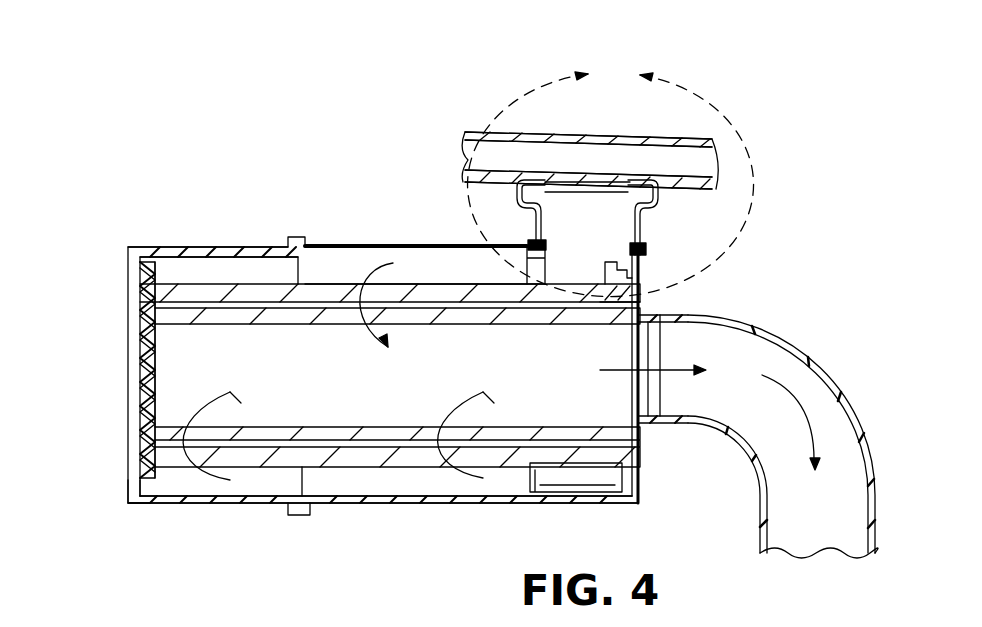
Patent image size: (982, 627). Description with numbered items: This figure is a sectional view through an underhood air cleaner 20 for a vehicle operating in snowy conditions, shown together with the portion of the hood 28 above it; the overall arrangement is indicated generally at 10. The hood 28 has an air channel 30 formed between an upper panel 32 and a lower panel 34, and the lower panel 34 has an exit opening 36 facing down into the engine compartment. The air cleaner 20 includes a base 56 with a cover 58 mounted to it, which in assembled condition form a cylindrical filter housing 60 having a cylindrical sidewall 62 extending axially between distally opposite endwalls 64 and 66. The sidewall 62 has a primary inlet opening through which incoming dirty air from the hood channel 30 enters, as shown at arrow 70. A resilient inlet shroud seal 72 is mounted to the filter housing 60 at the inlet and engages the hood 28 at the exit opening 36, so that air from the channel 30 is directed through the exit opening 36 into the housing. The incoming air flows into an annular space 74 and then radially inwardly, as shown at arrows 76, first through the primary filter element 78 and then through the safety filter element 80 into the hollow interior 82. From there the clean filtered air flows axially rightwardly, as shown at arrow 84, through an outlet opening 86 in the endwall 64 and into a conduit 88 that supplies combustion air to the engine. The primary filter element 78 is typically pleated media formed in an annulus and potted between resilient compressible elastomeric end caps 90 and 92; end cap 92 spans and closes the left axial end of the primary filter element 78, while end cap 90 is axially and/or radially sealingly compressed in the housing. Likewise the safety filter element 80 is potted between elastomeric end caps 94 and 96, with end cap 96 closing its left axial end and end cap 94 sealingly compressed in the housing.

The air induction system 10 is at (611, 176).
The underhood air cleaner 20 is at (328, 217).
The hood 28 is at (704, 136).
The air channel 30 is at (684, 163).
The upper panel 32 is at (736, 139).
The lower panel 34 is at (735, 190).
The exit opening 36 is at (582, 242).
The base 56 is at (374, 247).
The cover 58 is at (221, 256).
The cylindrical filter housing 60 is at (323, 535).
The cylindrical sidewall 62 is at (377, 506).
The endwall 64 is at (641, 490).
The endwall 66 is at (152, 498).
The arrow 70 is at (521, 219).
The resilient inlet shroud seal 72 is at (653, 233).
The annular space 74 is at (443, 278).
The arrows 76 is at (367, 336).
The primary filter element 78 is at (253, 293).
The safety filter element 80 is at (262, 326).
The hollow interior 82 is at (407, 393).
The arrow 84 is at (686, 366).
The outlet opening 86 is at (643, 405).
The conduit 88 is at (820, 353).
The end cap 90 is at (643, 274).
The end cap 92 is at (151, 293).
The end cap 94 is at (645, 308).
The end cap 96 is at (160, 388).